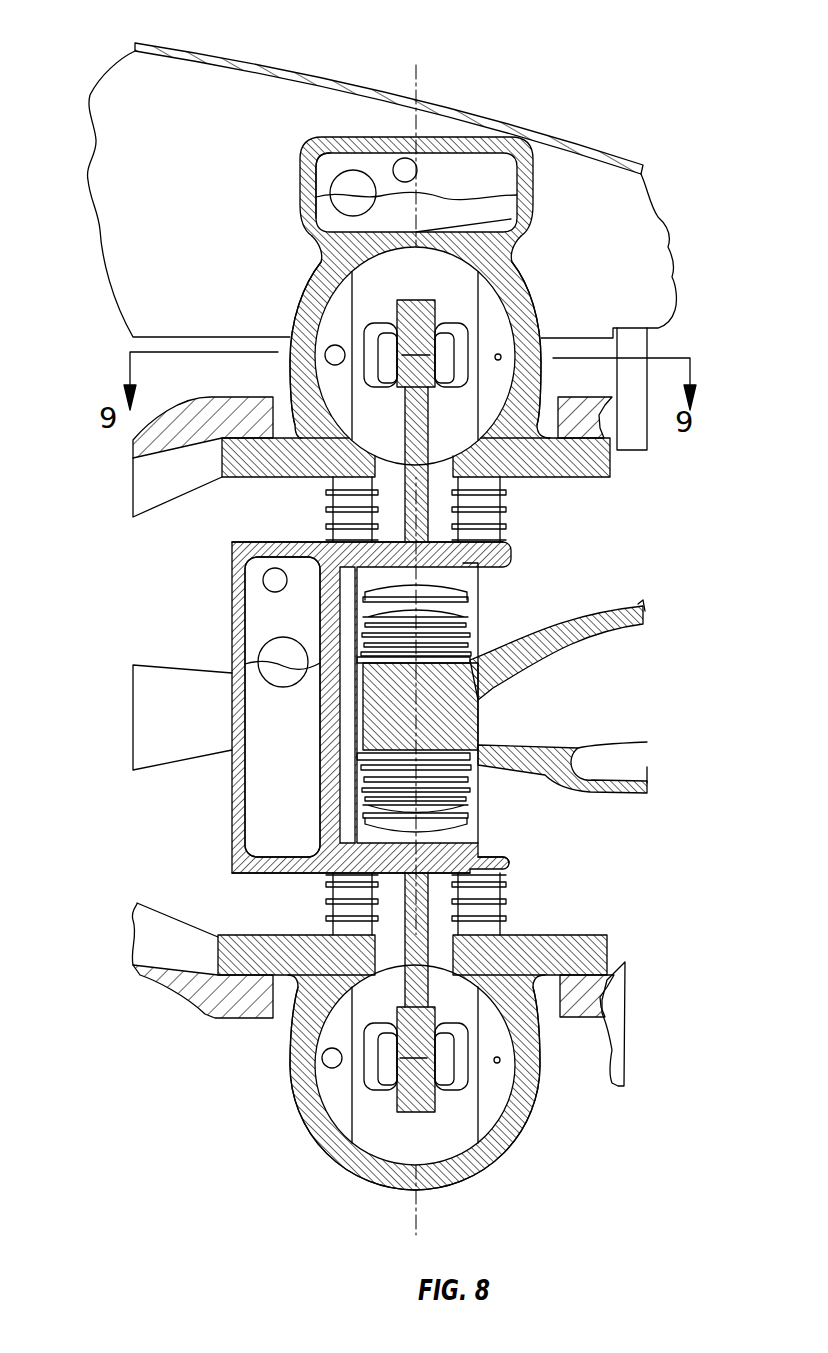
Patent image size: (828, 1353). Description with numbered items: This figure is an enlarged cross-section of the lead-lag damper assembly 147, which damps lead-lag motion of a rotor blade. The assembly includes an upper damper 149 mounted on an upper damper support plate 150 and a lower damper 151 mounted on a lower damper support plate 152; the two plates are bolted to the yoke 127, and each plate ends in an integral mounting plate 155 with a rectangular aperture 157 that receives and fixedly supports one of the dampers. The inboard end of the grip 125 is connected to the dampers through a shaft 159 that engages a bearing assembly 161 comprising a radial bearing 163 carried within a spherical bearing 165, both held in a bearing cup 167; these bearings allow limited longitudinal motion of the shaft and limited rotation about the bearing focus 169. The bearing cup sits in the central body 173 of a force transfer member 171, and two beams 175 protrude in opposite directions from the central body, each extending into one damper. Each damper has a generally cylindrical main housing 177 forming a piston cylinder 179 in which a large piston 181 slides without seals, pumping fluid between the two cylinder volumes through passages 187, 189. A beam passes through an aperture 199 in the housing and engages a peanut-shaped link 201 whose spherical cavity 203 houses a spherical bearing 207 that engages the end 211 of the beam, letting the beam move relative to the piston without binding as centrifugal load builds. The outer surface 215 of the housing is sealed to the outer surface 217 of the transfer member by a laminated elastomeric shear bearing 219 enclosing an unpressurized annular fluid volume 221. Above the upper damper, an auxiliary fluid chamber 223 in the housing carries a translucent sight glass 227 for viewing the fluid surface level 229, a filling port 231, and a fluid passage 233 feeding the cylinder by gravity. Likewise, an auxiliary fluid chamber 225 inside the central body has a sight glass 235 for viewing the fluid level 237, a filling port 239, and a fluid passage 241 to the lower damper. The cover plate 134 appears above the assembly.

The grip 125 is at (641, 603).
The yoke 127 is at (163, 748).
The cover plate 134 is at (196, 58).
The lead-lag damper assembly 147 is at (362, 132).
The upper damper 149 is at (540, 296).
The upper damper support plate 150 is at (130, 488).
The lower damper 151 is at (286, 1094).
The lower damper support plate 152 is at (130, 946).
The mounting plate 155 is at (208, 420).
The rectangular aperture 157 is at (552, 413).
The shaft 159 is at (472, 676).
The bearing assembly 161 is at (484, 603).
The radial bearing 163 is at (474, 773).
The spherical bearing 165 is at (477, 813).
The bearing cup 167 is at (480, 837).
The bearing focus 169 is at (390, 716).
The force transfer member 171 is at (230, 557).
The central body 173 is at (496, 861).
The beam 175 is at (432, 503).
The main housing 177 is at (334, 316).
The piston cylinder 179 is at (541, 275).
The piston 181 is at (289, 267).
The passage 187 is at (503, 356).
The passage 189 is at (330, 345).
The aperture 199 is at (446, 470).
The peanut-shaped link 201 is at (366, 386).
The spherical cavity 203 is at (453, 332).
The spherical bearing 207 is at (389, 330).
The end 211 is at (397, 425).
The outer surface 215 is at (615, 480).
The outer surface 217 is at (270, 541).
The laminated elastomeric shear bearing 219 is at (327, 500).
The annular fluid volume 221 is at (383, 532).
The auxiliary fluid chamber 223 is at (330, 175).
The auxiliary fluid chamber 225 is at (233, 871).
The translucent sight glass 227 is at (349, 168).
The fluid surface level 229 is at (470, 192).
The filling port 231 is at (410, 161).
The fluid passage 233 is at (516, 226).
The translucent sight glass 235 is at (268, 640).
The fluid level 237 is at (253, 660).
The filling port 239 is at (265, 583).
The fluid passage 241 is at (333, 845).